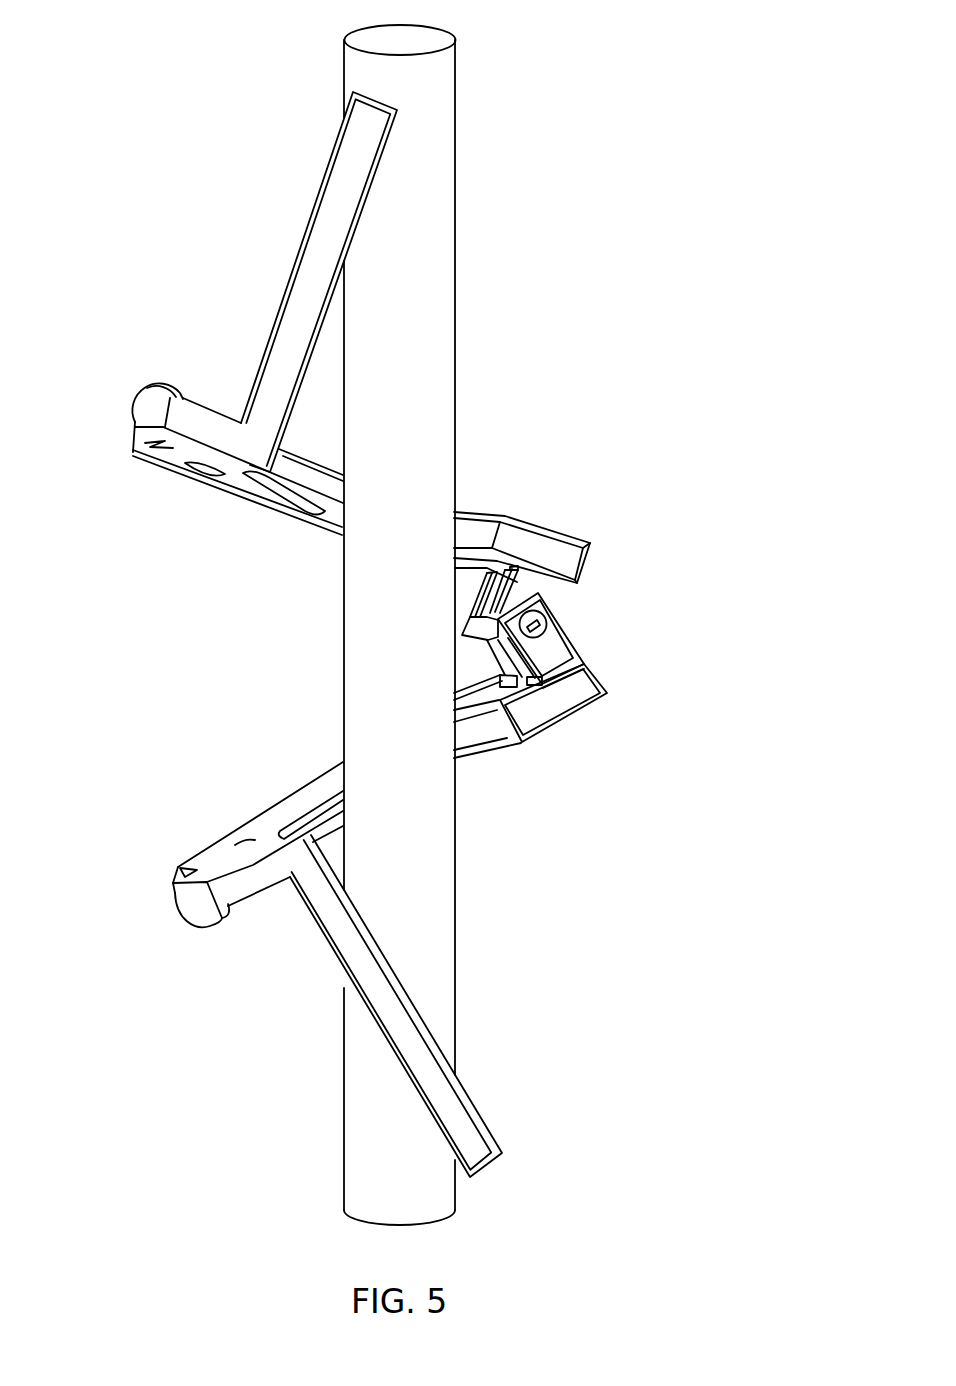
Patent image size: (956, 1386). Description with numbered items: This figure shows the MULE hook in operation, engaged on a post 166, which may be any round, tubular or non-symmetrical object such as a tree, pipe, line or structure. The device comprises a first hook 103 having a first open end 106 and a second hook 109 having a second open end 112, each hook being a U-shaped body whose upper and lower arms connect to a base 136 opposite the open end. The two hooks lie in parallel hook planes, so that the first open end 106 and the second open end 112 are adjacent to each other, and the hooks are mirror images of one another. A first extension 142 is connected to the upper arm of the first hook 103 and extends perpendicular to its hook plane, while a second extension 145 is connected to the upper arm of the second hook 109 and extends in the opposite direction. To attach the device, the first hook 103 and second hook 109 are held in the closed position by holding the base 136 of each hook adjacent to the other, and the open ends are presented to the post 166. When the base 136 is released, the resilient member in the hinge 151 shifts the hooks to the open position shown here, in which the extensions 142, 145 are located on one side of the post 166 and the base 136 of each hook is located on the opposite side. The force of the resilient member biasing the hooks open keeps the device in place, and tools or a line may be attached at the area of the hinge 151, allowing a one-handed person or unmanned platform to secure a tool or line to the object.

The first hook 103 is at (182, 452).
The first open end 106 is at (490, 477).
The second hook 109 is at (213, 842).
The second open end 112 is at (474, 790).
The base 136 is at (310, 490).
The first extension 142 is at (297, 237).
The second extension 145 is at (485, 1120).
The hinge 151 is at (573, 640).
The post 166 is at (456, 257).